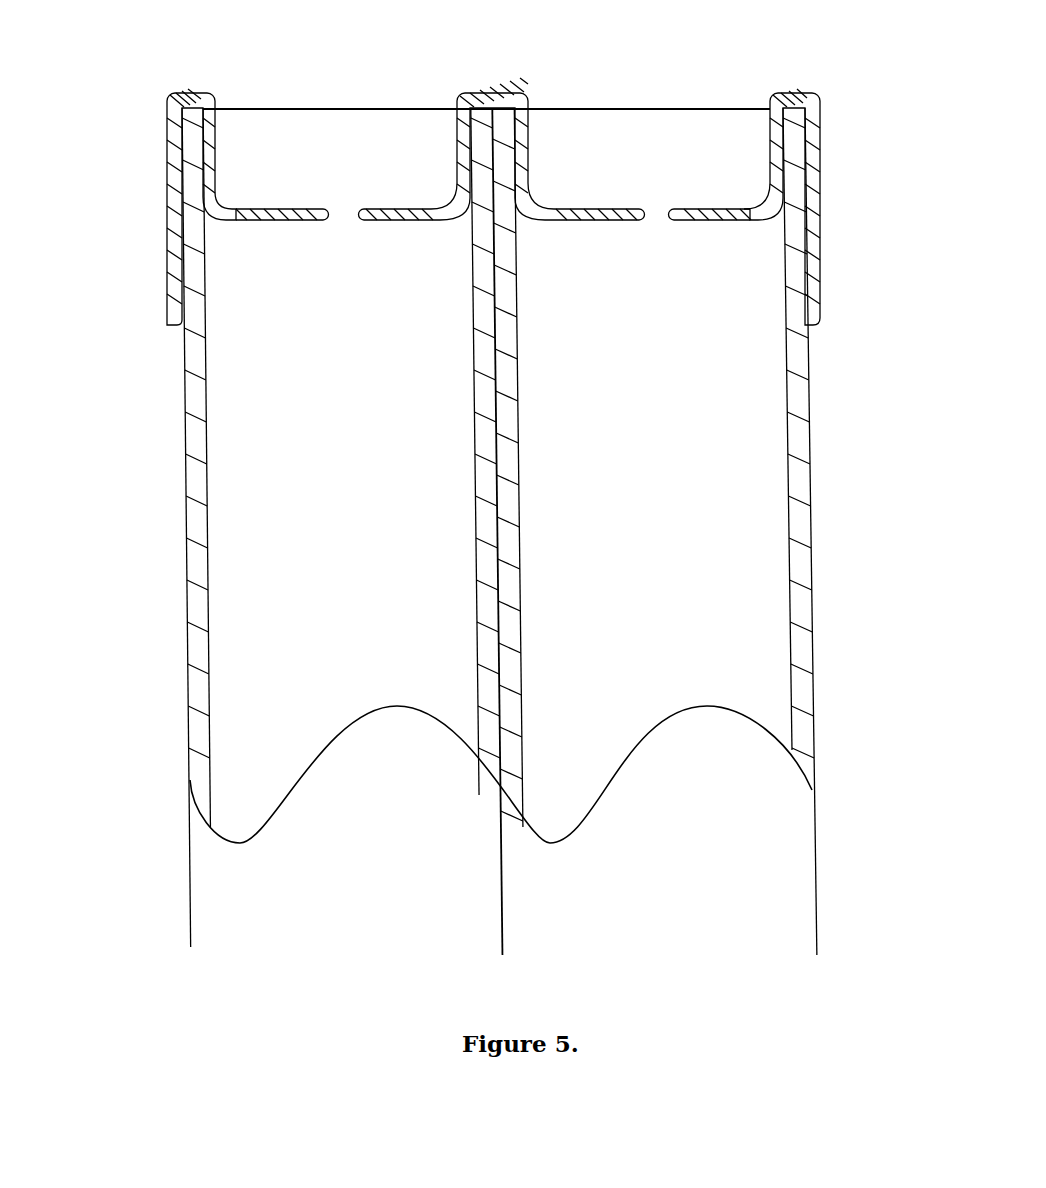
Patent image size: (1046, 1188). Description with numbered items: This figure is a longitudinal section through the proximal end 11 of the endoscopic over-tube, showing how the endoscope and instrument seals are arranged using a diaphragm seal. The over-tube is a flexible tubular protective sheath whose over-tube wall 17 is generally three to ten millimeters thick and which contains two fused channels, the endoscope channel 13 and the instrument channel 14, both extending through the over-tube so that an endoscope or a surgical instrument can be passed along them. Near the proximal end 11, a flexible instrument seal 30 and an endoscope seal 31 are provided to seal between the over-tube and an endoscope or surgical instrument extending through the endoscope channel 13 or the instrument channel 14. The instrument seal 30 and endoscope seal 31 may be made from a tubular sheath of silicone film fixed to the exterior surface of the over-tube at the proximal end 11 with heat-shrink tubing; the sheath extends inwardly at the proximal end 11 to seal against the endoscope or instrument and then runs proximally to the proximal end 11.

The proximal end 11 is at (558, 82).
The endoscope channel 13 is at (640, 165).
The instrument channel 14 is at (297, 162).
The over-tube wall 17 is at (163, 455).
The instrument seal 30 is at (250, 220).
The endoscope seal 31 is at (680, 217).